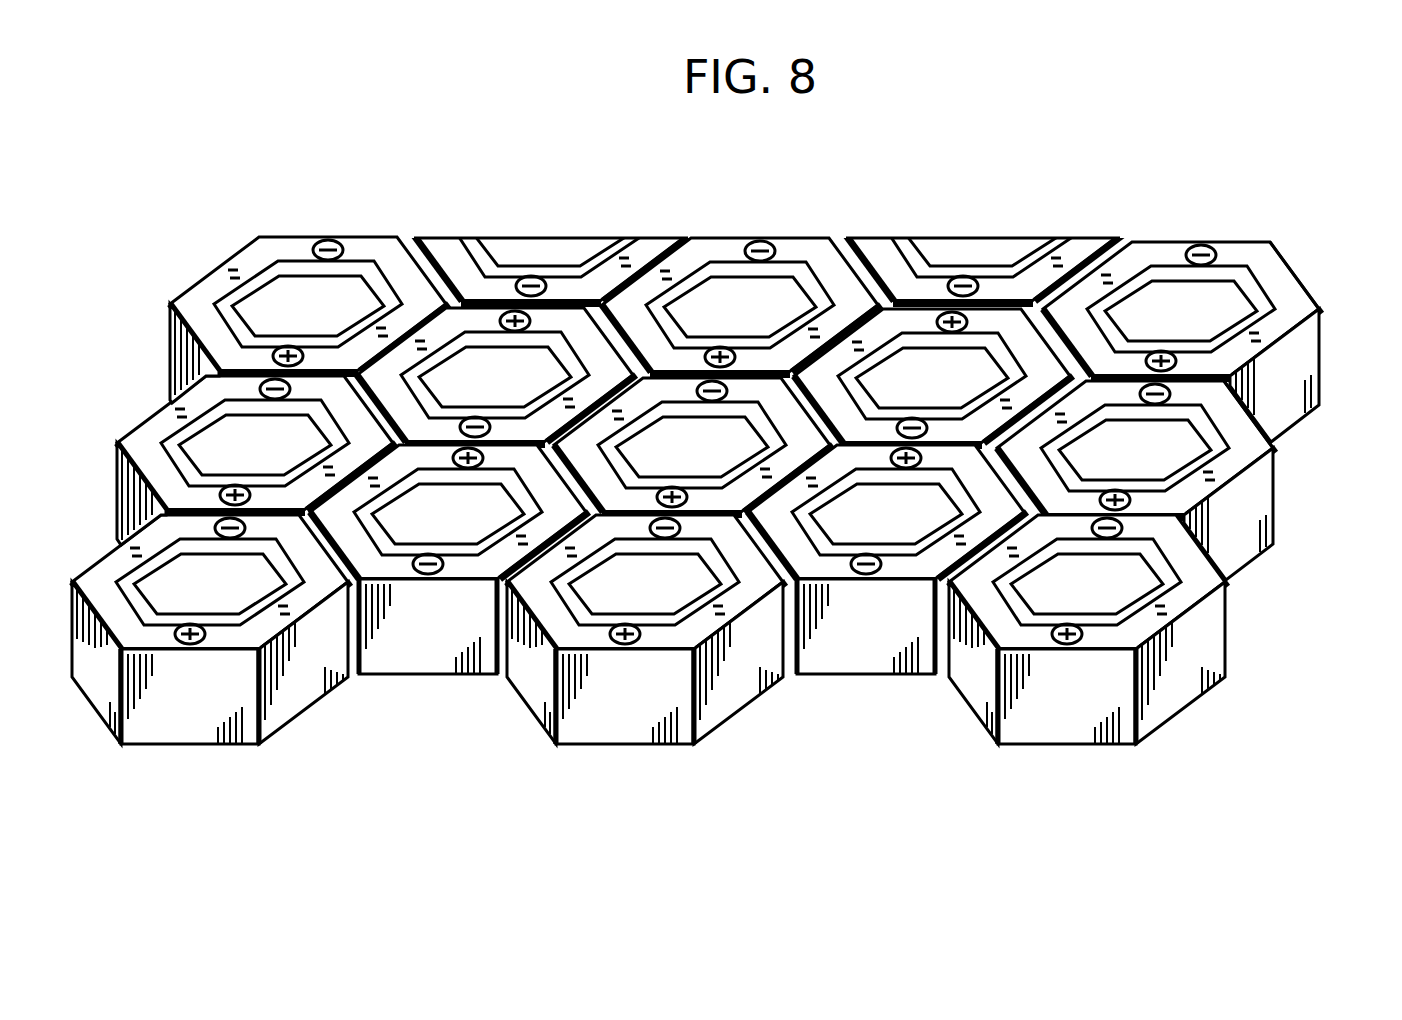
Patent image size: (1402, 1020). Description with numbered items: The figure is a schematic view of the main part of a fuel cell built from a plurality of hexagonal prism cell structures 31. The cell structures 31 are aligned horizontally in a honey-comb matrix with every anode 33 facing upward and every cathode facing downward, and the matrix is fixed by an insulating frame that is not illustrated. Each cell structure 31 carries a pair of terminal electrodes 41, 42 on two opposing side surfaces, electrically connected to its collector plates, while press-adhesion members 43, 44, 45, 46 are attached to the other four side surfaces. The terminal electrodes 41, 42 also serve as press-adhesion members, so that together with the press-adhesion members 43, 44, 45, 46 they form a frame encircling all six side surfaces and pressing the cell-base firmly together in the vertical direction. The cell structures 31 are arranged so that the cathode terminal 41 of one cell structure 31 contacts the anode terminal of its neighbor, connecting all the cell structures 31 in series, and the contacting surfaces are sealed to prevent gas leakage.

The cell structure 31 is at (813, 225).
The anode 33 is at (487, 357).
The terminal electrode 41 is at (425, 658).
The terminal electrode 42 is at (180, 727).
The press-adhesion member 43 is at (170, 412).
The press-adhesion member 44 is at (290, 700).
The press-adhesion member 45 is at (100, 690).
The press-adhesion member 46 is at (1293, 293).